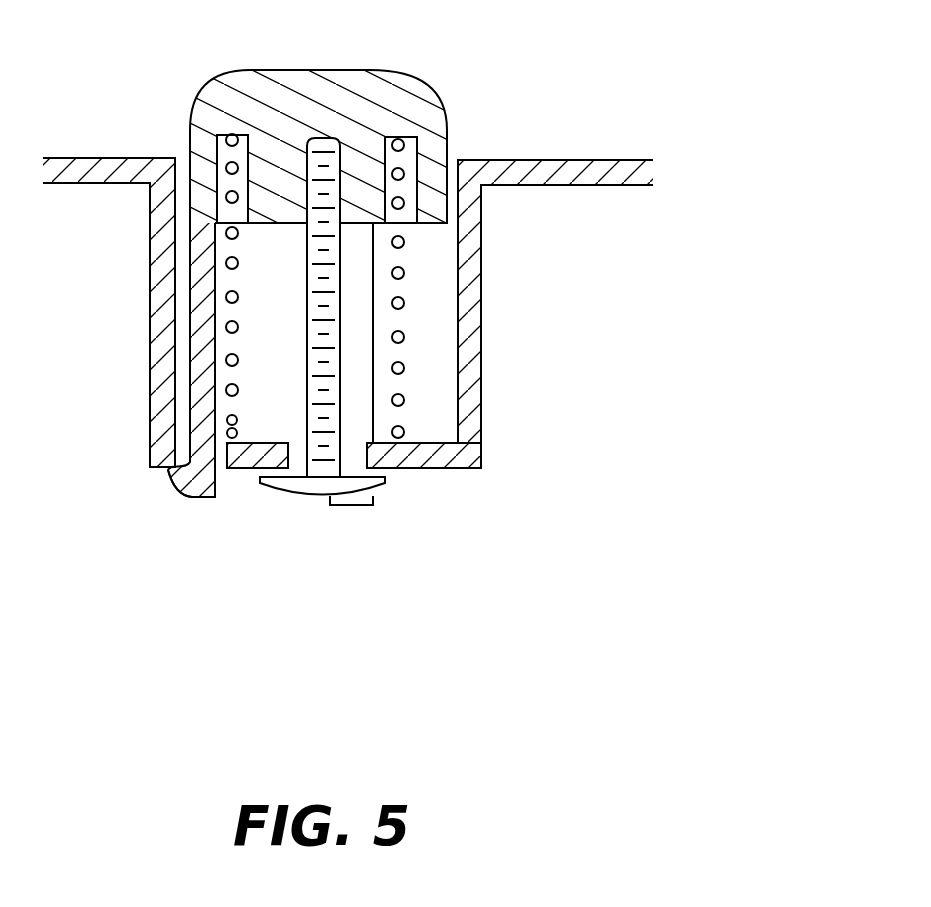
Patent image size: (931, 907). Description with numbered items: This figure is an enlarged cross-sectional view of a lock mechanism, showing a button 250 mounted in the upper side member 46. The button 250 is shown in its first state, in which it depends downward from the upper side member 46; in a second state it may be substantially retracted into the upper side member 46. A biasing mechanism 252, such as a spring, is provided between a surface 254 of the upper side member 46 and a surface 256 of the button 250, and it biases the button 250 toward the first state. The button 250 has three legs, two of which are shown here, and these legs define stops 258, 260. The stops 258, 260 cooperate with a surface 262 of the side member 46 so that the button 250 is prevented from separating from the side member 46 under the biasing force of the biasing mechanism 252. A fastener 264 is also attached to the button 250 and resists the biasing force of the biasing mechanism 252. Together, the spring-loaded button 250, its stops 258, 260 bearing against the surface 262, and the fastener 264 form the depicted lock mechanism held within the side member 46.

The upper side member 46 is at (573, 178).
The button 250 is at (466, 85).
The biasing mechanism 252 is at (414, 418).
The surface of the upper side member 254 is at (266, 434).
The surface of the button 256 is at (410, 142).
The stop 258 is at (173, 487).
The stop 260 is at (352, 515).
The surface of the side member 262 is at (412, 480).
The fastener 264 is at (300, 488).